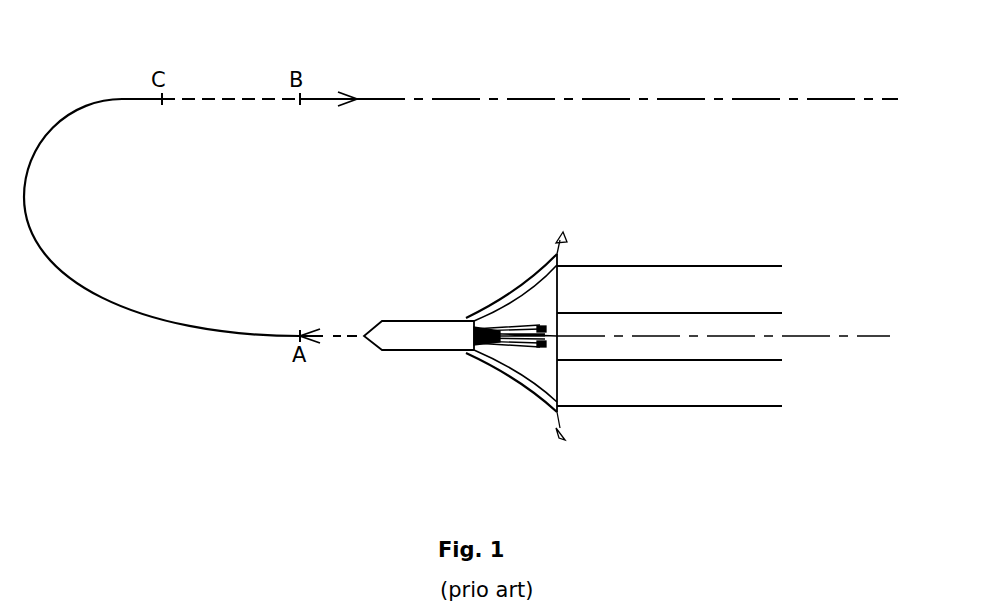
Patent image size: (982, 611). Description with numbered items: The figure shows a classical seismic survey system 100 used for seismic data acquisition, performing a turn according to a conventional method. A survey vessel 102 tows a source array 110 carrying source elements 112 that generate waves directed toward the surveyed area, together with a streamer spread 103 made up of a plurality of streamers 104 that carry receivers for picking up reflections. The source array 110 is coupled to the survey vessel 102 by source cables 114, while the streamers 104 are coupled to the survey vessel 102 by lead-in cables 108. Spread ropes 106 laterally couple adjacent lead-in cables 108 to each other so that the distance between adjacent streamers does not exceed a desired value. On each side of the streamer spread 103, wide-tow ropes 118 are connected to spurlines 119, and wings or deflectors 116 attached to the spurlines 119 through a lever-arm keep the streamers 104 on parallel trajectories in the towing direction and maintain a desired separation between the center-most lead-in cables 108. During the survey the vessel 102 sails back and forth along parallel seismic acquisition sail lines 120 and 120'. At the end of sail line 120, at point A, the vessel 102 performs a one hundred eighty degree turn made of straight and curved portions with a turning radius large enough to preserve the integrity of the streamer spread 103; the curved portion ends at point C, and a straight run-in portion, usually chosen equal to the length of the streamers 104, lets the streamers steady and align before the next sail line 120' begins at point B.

The seismic survey system 100 is at (362, 375).
The survey vessel 102 is at (417, 328).
The streamer spread 103 is at (787, 392).
The streamers 104 is at (648, 407).
The spread ropes 106 is at (560, 282).
The lead-in cables 108 is at (478, 356).
The source array 110 is at (557, 346).
The source elements 112 is at (540, 350).
The source cables 114 is at (522, 345).
The wings or deflectors 116 is at (567, 236).
The wide-tow ropes 118 is at (500, 298).
The spurlines 119 is at (553, 252).
The seismic acquisition sail line 120 is at (723, 369).
The next seismic acquisition sail line 120' is at (599, 66).